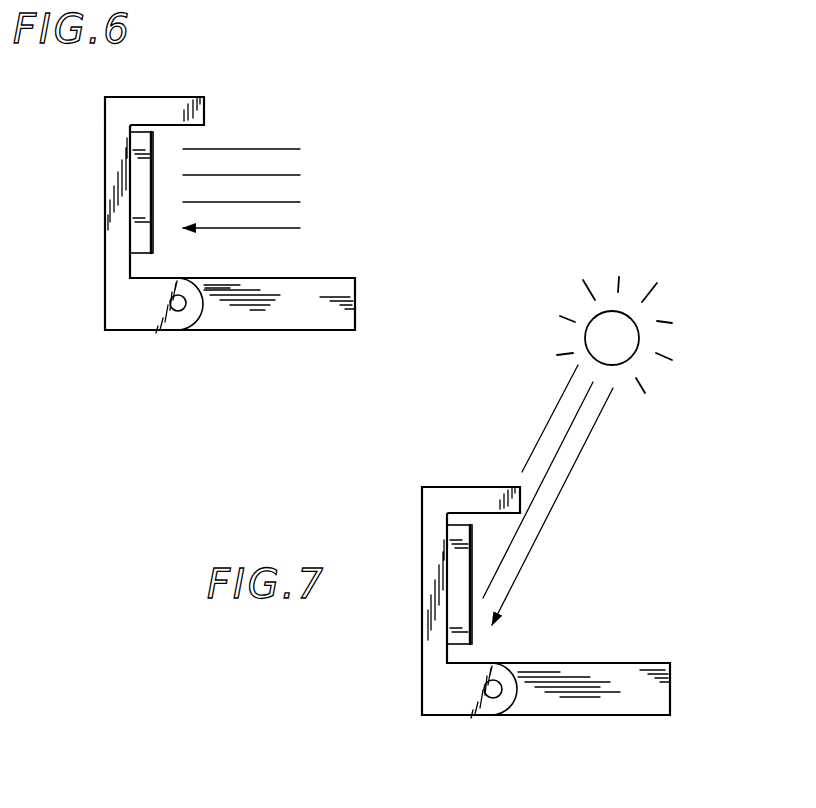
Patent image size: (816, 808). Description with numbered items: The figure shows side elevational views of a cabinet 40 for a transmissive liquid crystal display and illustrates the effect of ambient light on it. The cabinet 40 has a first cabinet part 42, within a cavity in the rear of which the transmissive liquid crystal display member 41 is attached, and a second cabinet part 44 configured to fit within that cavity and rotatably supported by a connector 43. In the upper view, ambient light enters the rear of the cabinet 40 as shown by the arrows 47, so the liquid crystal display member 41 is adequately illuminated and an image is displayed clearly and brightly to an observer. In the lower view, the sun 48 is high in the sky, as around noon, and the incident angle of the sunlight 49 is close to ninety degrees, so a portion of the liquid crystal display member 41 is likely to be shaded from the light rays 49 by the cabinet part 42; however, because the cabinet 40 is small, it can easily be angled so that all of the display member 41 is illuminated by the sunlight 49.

In FIG. 6, the cabinet 40 is at (83, 293).
In FIG. 7, the cabinet 40 is at (405, 703).
In FIG. 6, the transmissive liquid crystal display member 41 is at (138, 202).
In FIG. 7, the transmissive liquid crystal display member 41 is at (455, 613).
In FIG. 6, the first cabinet part 42 is at (118, 141).
In FIG. 7, the first cabinet part 42 is at (465, 495).
In FIG. 6, the connector 43 is at (178, 311).
In FIG. 7, the connector 43 is at (493, 698).
In FIG. 6, the second cabinet part 44 is at (292, 313).
In FIG. 7, the second cabinet part 44 is at (657, 698).
In FIG. 6, the arrows 47 is at (298, 181).
In FIG. 7, the sun 48 is at (635, 340).
In FIG. 7, the sunlight 49 is at (553, 512).